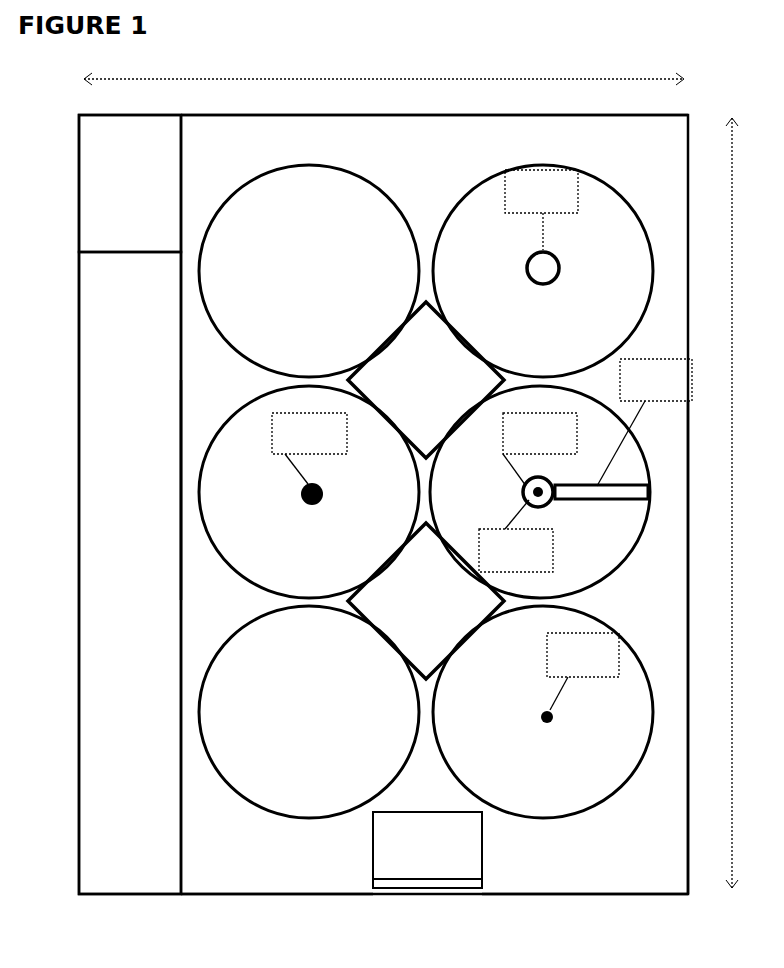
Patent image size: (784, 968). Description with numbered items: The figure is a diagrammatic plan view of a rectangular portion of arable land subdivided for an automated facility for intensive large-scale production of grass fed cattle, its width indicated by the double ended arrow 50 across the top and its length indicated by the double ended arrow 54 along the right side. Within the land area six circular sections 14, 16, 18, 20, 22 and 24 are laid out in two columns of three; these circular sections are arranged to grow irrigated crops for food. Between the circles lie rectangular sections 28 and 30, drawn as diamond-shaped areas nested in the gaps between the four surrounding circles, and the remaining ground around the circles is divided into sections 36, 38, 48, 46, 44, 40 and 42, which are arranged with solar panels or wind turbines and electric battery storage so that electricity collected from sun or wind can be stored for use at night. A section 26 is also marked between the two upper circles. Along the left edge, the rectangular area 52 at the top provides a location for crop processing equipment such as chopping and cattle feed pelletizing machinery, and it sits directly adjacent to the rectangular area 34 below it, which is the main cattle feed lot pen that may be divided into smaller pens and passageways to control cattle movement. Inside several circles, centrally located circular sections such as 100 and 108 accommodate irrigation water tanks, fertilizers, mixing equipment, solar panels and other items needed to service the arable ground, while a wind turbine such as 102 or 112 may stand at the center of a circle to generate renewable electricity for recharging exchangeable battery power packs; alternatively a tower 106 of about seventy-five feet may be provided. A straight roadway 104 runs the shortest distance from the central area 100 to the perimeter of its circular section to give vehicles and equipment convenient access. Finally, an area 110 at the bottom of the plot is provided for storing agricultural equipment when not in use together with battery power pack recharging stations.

The circular section 14 is at (309, 271).
The circular section 16 is at (543, 271).
The circular section 18 is at (309, 492).
The circular section 20 is at (540, 492).
The circular section 22 is at (309, 712).
The circular section 24 is at (543, 712).
The gap between first and second platforms 26 is at (470, 164).
The rectangular section 28 is at (426, 380).
The rectangular section 30 is at (426, 601).
The main cattle feed lot pen 34 is at (130, 573).
The section 36 is at (300, 149).
The section 38 is at (615, 148).
The section 40 is at (277, 882).
The section 42 is at (585, 882).
The section 44 is at (670, 747).
The section 46 is at (670, 500).
The section 48 is at (216, 490).
The double ended arrow 50 is at (384, 72).
The rectangular area 52 is at (130, 183).
The double ended arrow 54 is at (740, 503).
The centrally located circular section 100 is at (540, 449).
The centrally located circular section 102 is at (516, 536).
The roadway 104 is at (623, 429).
The tower 106 is at (309, 448).
The central area 108 is at (541, 210).
The area 110 is at (427, 850).
The wind turbine 112 is at (583, 671).